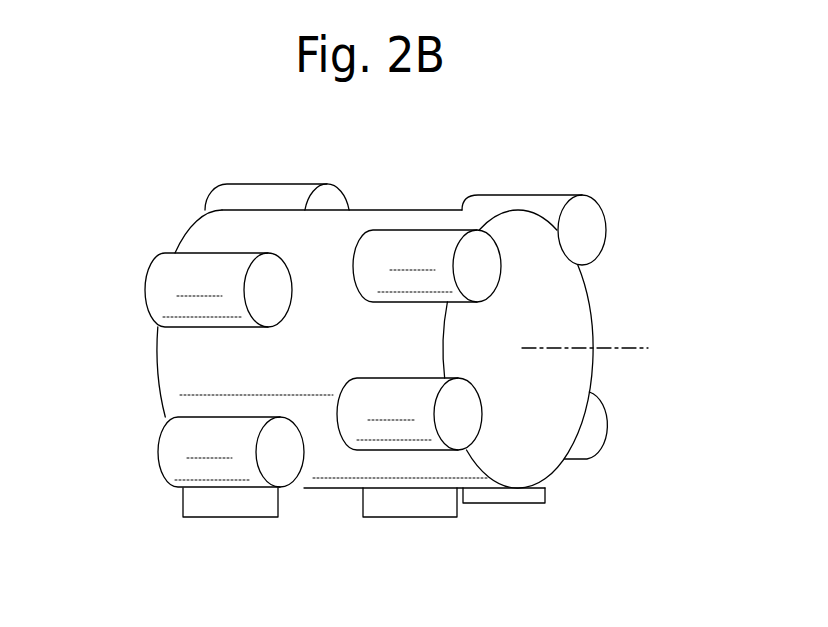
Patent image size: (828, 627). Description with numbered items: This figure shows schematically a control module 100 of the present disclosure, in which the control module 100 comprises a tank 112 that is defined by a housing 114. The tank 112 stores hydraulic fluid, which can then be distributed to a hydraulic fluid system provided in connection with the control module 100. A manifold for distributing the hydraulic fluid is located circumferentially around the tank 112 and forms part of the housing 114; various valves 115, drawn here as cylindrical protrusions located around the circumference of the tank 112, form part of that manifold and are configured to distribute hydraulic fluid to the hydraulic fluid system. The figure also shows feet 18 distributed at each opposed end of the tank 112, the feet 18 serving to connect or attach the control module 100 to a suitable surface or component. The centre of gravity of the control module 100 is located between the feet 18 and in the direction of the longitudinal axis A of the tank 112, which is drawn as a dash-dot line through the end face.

The control module 100 is at (180, 146).
The tank 112 is at (172, 375).
The housing 114 is at (200, 233).
The valves 115 is at (158, 283).
The mounting feet 18 is at (241, 507).
The longitudinal axis A is at (640, 348).